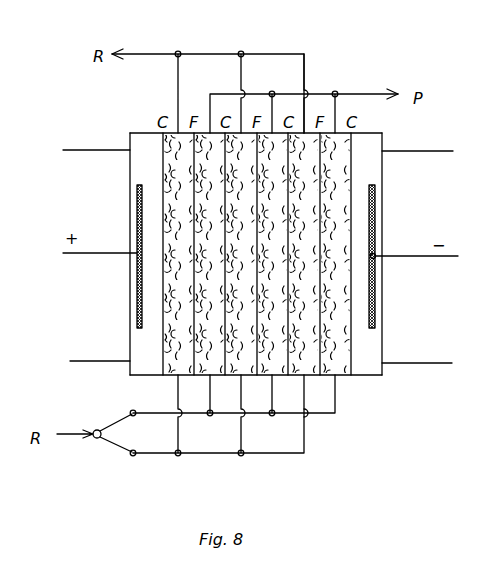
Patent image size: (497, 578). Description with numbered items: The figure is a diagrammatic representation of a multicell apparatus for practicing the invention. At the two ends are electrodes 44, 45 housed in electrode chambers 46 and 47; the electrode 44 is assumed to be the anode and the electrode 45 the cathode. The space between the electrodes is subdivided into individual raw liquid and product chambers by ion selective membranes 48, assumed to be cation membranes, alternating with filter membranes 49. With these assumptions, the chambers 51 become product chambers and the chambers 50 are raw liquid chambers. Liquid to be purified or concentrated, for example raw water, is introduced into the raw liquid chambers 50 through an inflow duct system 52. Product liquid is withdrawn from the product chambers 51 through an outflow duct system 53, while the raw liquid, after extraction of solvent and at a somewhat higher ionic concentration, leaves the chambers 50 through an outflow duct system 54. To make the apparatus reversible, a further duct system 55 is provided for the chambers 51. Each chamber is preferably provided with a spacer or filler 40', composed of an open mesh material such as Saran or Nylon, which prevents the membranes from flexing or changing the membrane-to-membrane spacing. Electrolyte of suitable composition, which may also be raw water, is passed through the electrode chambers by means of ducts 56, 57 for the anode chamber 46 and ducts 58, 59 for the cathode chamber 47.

The spacer or filler 40' is at (165, 254).
The electrode 44 is at (138, 218).
The electrode 45 is at (375, 220).
The electrode chamber 46 is at (150, 355).
The electrode chamber 47 is at (368, 354).
The ion selective membrane 48 is at (163, 184).
The filter membrane 49 is at (194, 222).
The raw liquid chamber 50 is at (247, 276).
The product chamber 51 is at (214, 313).
The inflow duct system 52 is at (230, 453).
The outflow duct system 53 is at (317, 93).
The outflow duct system 54 is at (239, 52).
The duct system 55 is at (157, 413).
The duct 56 is at (98, 363).
The duct 57 is at (103, 148).
The duct 58 is at (405, 367).
The duct 59 is at (415, 151).